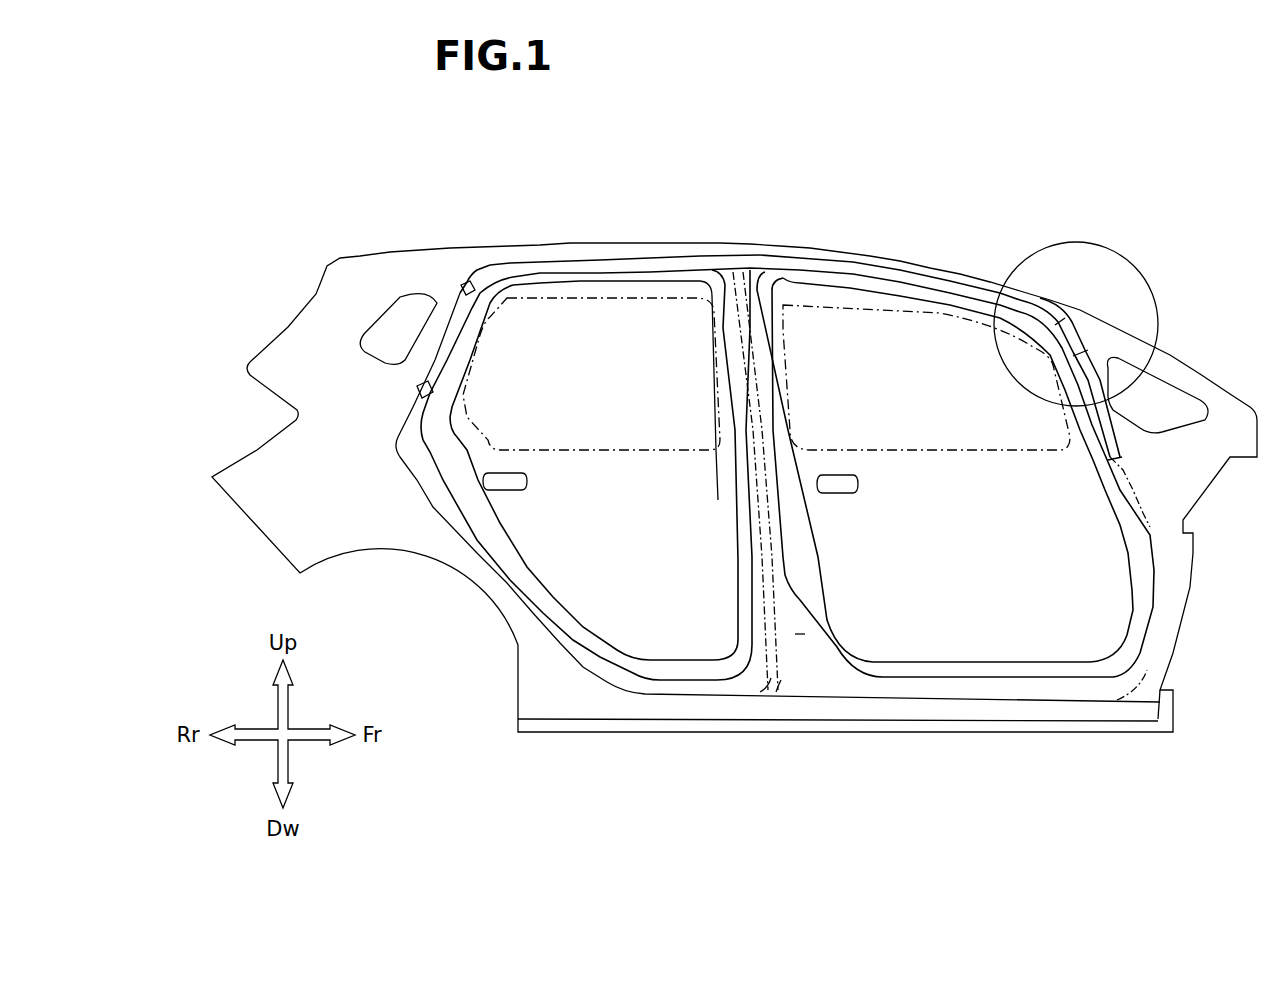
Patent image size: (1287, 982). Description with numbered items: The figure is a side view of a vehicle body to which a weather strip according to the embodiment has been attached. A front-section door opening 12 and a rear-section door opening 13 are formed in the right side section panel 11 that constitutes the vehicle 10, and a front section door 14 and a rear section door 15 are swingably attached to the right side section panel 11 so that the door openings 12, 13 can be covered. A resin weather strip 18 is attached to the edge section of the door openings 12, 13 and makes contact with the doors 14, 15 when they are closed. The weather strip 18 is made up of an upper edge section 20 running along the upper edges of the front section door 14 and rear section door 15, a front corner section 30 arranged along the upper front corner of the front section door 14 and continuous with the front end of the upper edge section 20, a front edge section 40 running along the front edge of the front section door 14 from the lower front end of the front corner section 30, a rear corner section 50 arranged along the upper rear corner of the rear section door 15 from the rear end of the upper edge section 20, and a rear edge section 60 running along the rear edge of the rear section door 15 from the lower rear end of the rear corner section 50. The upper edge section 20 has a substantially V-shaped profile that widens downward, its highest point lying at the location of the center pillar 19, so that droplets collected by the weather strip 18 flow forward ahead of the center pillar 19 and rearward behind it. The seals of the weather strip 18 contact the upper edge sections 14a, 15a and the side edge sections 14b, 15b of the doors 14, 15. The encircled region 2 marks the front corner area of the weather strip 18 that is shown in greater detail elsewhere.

The vehicle 10 is at (228, 155).
The right side section panel 11 is at (340, 250).
The front-section door opening 12 is at (960, 662).
The rear-section door opening 13 is at (658, 662).
The front section door 14 is at (1160, 690).
The upper edge section of the front section door 14a is at (858, 263).
The side edge section of the front section door 14b is at (1117, 420).
The rear section door 15 is at (773, 690).
The upper edge section of the rear section door 15a is at (590, 259).
The side edge section of the rear section door 15b is at (433, 348).
The weather strip 18 is at (405, 120).
The center pillar 19 is at (800, 637).
The upper edge section 20 is at (692, 253).
The front corner section 30 is at (1066, 310).
The front edge section 40 is at (1098, 345).
The rear corner section 50 is at (488, 268).
The rear edge section 60 is at (451, 291).
The enlarged detail region 2 is at (1133, 265).